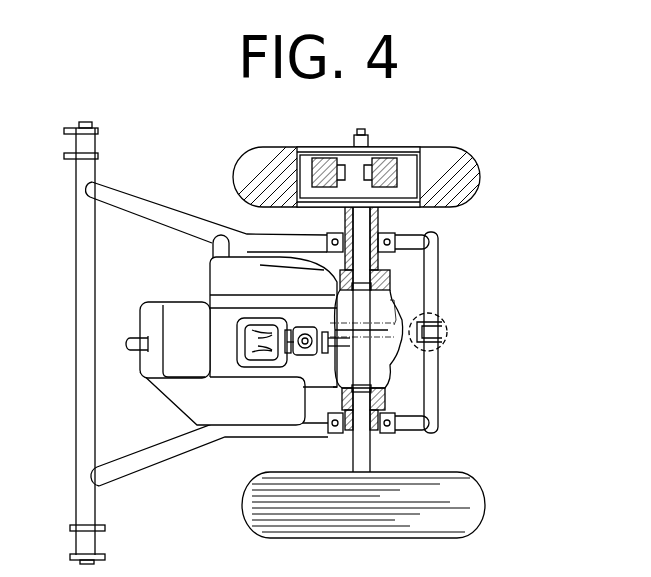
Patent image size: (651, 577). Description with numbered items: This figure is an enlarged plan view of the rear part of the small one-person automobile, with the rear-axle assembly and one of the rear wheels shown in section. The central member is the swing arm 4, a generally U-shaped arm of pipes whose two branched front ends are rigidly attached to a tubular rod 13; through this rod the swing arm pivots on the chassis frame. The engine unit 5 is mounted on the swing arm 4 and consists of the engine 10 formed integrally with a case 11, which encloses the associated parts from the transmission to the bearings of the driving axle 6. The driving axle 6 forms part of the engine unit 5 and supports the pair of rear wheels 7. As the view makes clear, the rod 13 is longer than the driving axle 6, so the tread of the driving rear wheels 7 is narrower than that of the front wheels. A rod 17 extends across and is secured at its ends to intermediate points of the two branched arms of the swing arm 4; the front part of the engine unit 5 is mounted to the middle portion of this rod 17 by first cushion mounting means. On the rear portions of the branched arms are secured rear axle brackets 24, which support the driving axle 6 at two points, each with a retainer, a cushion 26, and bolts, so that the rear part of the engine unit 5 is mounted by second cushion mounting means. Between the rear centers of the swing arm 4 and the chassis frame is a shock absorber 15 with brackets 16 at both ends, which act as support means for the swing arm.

The swing arm 4 is at (183, 443).
The engine unit 5 is at (236, 292).
The driving axle 6 is at (353, 456).
The rear wheels 7 is at (453, 146).
The engine 10 is at (168, 322).
The case 11 is at (211, 276).
The rod 13 is at (90, 420).
The shock absorber 15 is at (443, 316).
The brackets 16 is at (446, 334).
The rod 17 is at (212, 248).
The rear axle brackets 24 is at (384, 417).
The cushion 26 is at (328, 235).